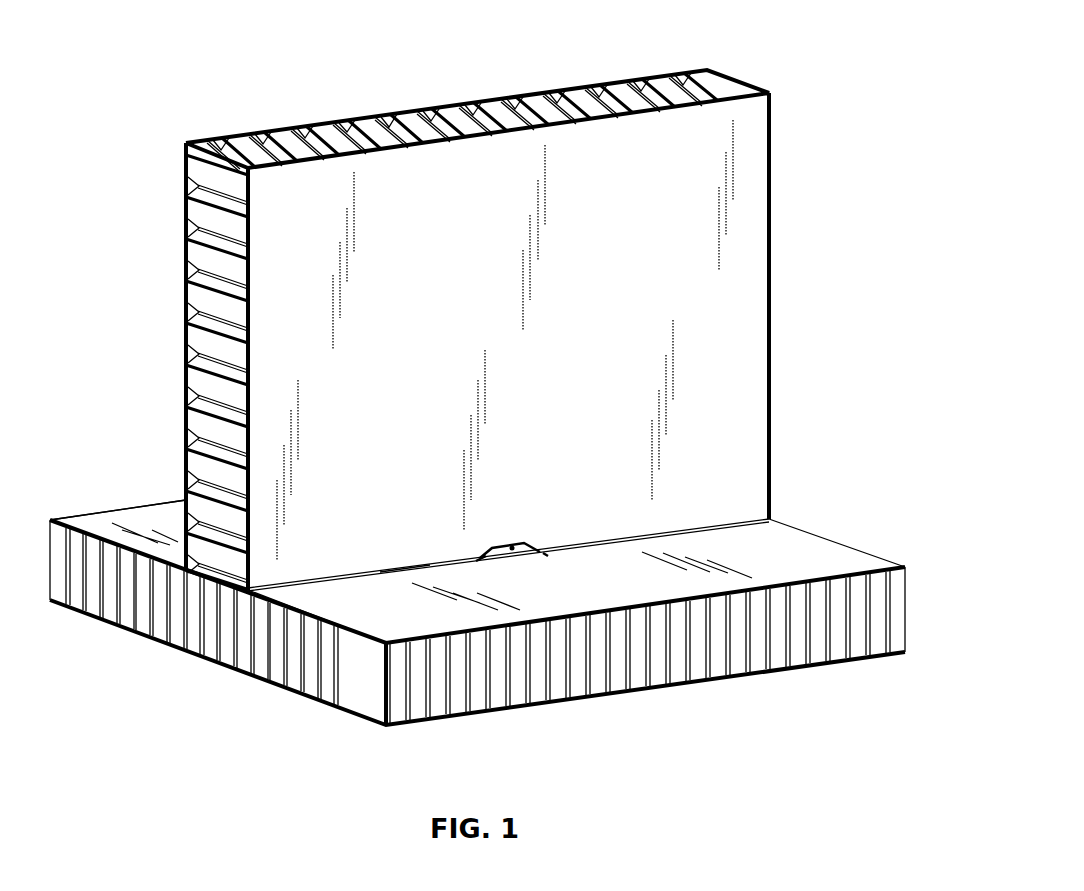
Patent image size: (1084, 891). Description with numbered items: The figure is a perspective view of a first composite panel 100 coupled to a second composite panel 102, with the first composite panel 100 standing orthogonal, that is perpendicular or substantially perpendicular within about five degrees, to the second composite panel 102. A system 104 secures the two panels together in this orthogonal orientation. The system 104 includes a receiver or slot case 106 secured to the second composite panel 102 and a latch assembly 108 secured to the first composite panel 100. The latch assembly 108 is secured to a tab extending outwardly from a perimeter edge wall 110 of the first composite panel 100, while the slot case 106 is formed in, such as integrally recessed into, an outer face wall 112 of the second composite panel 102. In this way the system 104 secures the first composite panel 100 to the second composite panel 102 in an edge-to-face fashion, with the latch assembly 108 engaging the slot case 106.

The first composite panel 100 is at (502, 422).
The second composite panel 102 is at (505, 612).
The system 104 is at (521, 422).
The slot case 106 is at (405, 570).
The latch assembly 108 is at (530, 545).
The perimeter edge wall 110 is at (293, 588).
The outer face wall 112 is at (808, 557).